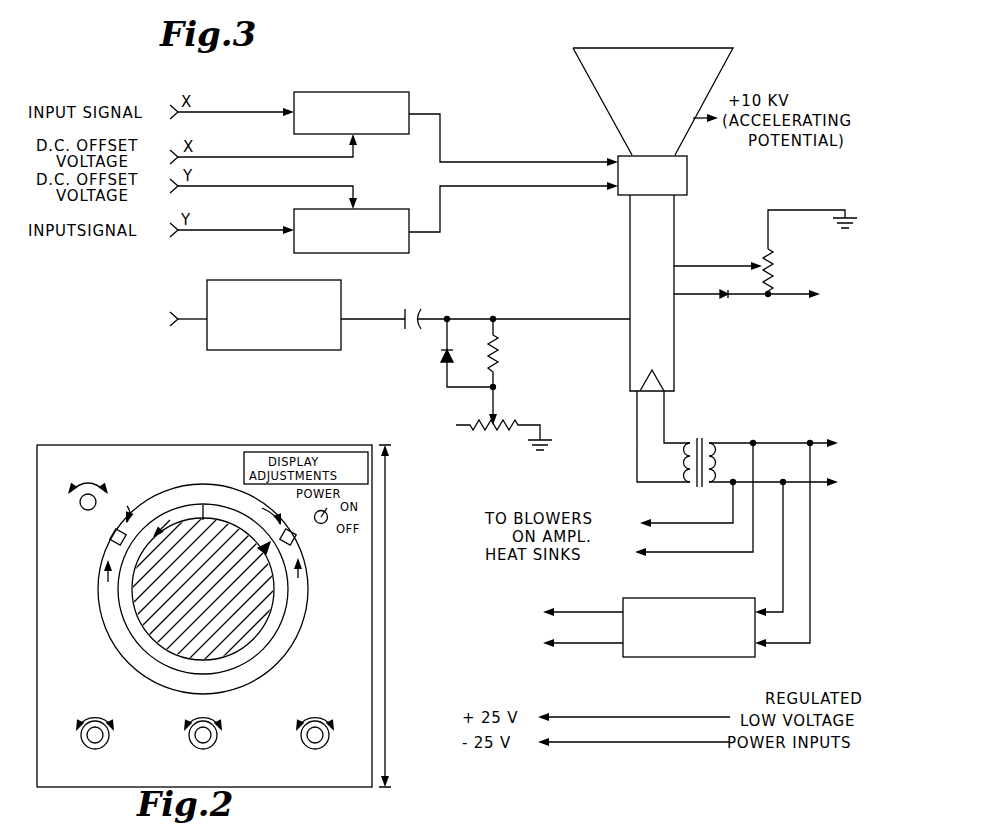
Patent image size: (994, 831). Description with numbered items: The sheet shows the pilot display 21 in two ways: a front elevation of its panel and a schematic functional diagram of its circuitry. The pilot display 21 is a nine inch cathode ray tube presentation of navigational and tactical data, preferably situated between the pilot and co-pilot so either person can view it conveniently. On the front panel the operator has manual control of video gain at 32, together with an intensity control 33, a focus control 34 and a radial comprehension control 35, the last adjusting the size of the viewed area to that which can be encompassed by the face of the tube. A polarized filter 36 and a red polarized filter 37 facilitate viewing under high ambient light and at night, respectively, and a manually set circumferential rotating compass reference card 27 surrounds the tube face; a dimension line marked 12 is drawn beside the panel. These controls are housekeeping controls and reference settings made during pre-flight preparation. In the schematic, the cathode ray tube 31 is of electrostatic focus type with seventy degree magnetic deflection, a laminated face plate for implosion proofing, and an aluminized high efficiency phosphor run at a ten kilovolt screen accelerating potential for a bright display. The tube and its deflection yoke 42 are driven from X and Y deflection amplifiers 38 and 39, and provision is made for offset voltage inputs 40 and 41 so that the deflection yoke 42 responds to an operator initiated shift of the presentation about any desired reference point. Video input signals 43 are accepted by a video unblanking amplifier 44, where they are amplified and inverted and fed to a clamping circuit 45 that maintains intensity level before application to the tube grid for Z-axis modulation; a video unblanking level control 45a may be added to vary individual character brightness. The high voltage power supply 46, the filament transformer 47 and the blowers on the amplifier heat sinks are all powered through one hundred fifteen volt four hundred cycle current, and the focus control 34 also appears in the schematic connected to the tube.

In FIG. 2, the display dimension 12 is at (386, 616).
In FIG. 2, the pilot display 21 is at (190, 445).
In FIG. 2, the compass reference card 27 is at (155, 656).
In FIG. 3, the cathode ray tube 31 is at (584, 68).
In FIG. 2, the video gain control 32 is at (84, 510).
In FIG. 2, the intensity control 33 is at (104, 745).
In FIG. 3, the focus control 34 is at (764, 263).
In FIG. 2, the focus control 34 is at (314, 749).
In FIG. 2, the radial comprehension control 35 is at (203, 749).
In FIG. 2, the polarized filter 36 is at (296, 543).
In FIG. 2, the red polarized filter 37 is at (110, 543).
In FIG. 3, the X deflection amplifier 38 is at (409, 95).
In FIG. 3, the Y deflection amplifier 39 is at (384, 209).
In FIG. 3, the offset voltage input 40 is at (236, 156).
In FIG. 3, the offset voltage input 41 is at (240, 186).
In FIG. 3, the deflection yoke 42 is at (617, 194).
In FIG. 3, the video input signals 43 is at (172, 328).
In FIG. 3, the video unblanking amplifier 44 is at (275, 351).
In FIG. 3, the clamping circuit 45 is at (495, 318).
In FIG. 3, the video unblanking level control 45a is at (505, 420).
In FIG. 3, the high voltage power supply 46 is at (686, 598).
In FIG. 3, the filament transformer 47 is at (722, 443).